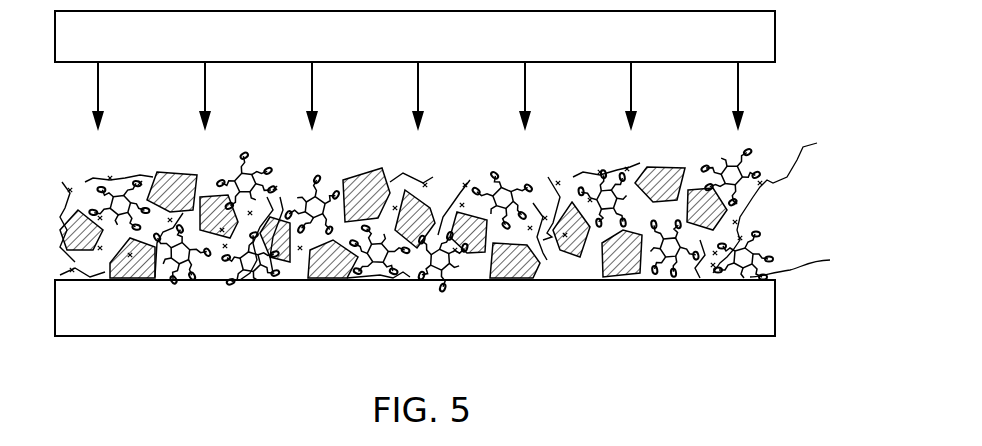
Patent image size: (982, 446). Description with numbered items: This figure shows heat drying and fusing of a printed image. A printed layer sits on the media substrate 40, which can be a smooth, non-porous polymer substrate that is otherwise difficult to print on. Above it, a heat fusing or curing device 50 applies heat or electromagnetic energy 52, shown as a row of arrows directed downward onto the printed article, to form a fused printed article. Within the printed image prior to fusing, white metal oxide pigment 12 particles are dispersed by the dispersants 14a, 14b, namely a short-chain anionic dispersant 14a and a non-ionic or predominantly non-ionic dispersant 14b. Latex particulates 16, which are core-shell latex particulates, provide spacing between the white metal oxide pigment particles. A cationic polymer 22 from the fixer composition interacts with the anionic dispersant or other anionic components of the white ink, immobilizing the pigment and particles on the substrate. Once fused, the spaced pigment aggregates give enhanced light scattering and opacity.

The white metal oxide pigment 12 is at (242, 276).
The short-chain anionic dispersant 14a is at (740, 260).
The non-ionic or predominantly non-ionic dispersant 14b is at (830, 260).
The latex particulates 16 is at (307, 272).
The cationic polymer 22 is at (817, 143).
The media substrate 40 is at (415, 308).
The heat fusing or curing device 50 is at (415, 36).
The heat or electromagnetic energy 52 is at (738, 97).